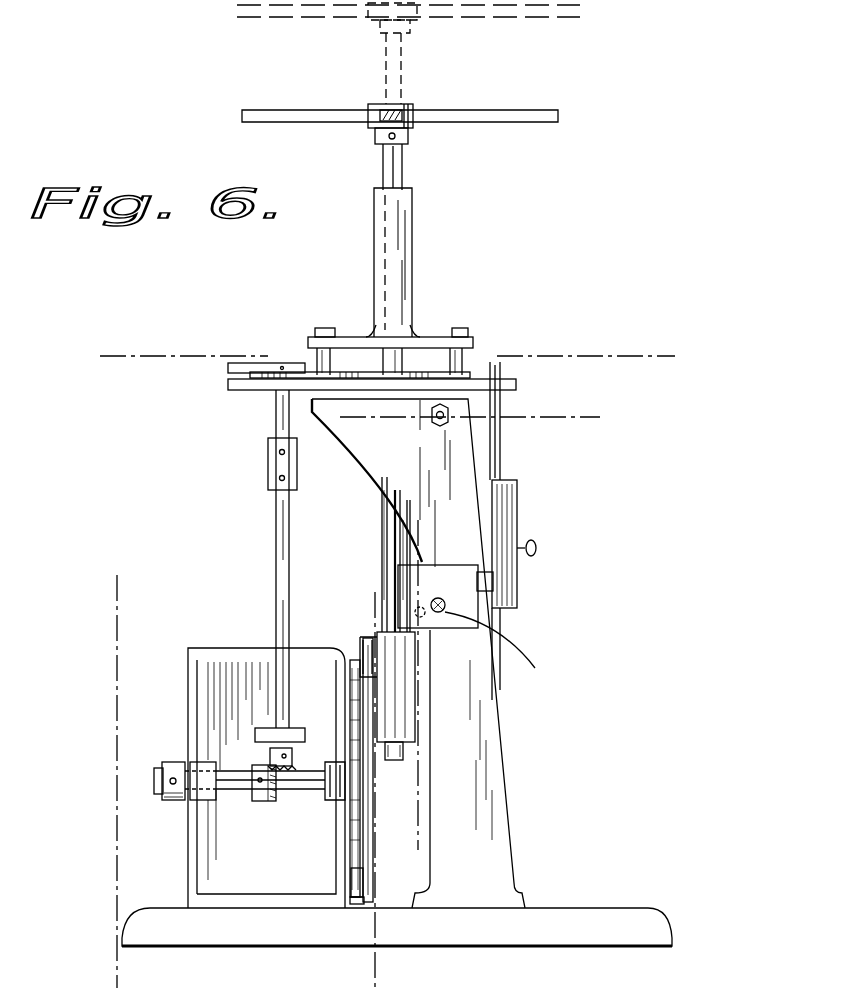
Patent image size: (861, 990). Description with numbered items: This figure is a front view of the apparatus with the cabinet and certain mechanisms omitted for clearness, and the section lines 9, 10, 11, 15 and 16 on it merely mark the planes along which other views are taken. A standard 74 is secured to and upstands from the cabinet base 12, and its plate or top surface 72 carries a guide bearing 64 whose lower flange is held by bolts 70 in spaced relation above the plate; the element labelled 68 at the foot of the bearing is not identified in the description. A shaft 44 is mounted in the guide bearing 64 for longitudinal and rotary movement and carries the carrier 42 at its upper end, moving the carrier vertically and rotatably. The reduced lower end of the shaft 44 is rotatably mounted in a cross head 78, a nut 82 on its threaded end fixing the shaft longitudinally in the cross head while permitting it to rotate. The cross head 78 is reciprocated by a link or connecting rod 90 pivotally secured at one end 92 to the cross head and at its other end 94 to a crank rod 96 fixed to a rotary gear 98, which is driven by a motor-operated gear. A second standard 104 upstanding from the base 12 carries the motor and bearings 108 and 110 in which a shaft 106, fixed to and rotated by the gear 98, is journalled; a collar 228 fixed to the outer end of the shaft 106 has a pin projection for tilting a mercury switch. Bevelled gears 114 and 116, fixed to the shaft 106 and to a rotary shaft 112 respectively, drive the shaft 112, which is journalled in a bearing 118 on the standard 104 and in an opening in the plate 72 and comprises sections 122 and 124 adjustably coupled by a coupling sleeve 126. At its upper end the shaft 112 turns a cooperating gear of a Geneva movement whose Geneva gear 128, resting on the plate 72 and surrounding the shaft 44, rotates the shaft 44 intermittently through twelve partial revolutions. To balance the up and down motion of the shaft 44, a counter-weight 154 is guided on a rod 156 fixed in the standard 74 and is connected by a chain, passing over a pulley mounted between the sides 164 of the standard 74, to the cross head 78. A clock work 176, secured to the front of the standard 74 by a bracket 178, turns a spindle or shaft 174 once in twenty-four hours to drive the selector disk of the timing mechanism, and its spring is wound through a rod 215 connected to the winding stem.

The section line 9- 9 is at (375, 612).
The section line 10- 10 is at (117, 612).
The section line 11- 11 is at (418, 555).
The cabinet base 12 is at (570, 920).
The section line 15- 15 is at (118, 356).
The section line 16- 16 is at (572, 417).
The carrier 42 is at (500, 116).
The shaft 44 is at (397, 75).
The guide bearing 64 is at (412, 268).
The flange plate 68 is at (415, 335).
The bolts 70 is at (322, 328).
The plate or top surface 72 is at (520, 383).
The standard 74 is at (505, 748).
The cross head 78 is at (395, 725).
The nut 82 is at (403, 752).
The link or connecting rod 90 is at (375, 858).
The end of link 92 is at (372, 645).
The other end of link 94 is at (352, 904).
The crank rod 96 is at (358, 882).
The rotary gear 98 is at (350, 850).
The standard 104 is at (222, 660).
The shaft 106 is at (298, 790).
The bearing 108 is at (205, 795).
The bearing 110 is at (330, 762).
The rotary shaft 112 is at (276, 520).
The bevelled gear 114 is at (268, 801).
The bevelled gear 116 is at (270, 755).
The bearing 118 is at (265, 728).
The shaft section 122 is at (275, 565).
The shaft section 124 is at (275, 415).
The coupling sleeve 126 is at (268, 462).
The Geneva gear 128 is at (438, 374).
The counter-weight 154 is at (518, 580).
The rod 156 is at (502, 643).
The sides of standard 164 is at (508, 856).
The spindle or shaft 174 is at (508, 645).
The clock work 176 is at (465, 618).
The bracket 178 is at (495, 583).
The rod 215 is at (400, 600).
The collar 228 is at (172, 762).